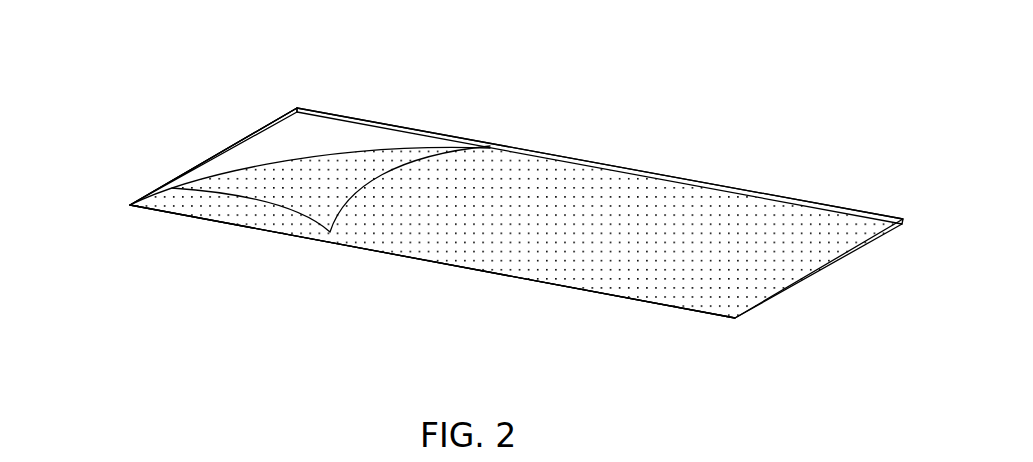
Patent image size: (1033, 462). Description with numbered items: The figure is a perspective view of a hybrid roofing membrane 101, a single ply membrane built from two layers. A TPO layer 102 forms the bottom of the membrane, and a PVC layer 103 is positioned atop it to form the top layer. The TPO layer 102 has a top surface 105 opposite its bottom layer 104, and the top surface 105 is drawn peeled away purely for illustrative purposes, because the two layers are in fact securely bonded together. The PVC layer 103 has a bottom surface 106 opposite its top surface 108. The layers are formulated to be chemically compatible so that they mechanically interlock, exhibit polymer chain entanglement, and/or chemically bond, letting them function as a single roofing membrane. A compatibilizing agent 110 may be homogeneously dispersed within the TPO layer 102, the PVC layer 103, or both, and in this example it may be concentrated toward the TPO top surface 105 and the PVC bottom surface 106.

The hybrid roofing membrane 101 is at (637, 92).
The TPO layer 102 is at (775, 295).
The PVC layer 103 is at (195, 167).
The bottom layer 104 is at (613, 282).
The top surface 105 is at (323, 205).
The bottom surface 106 is at (348, 140).
The top surface 108 is at (298, 110).
The compatibilizing agent 110 is at (565, 212).